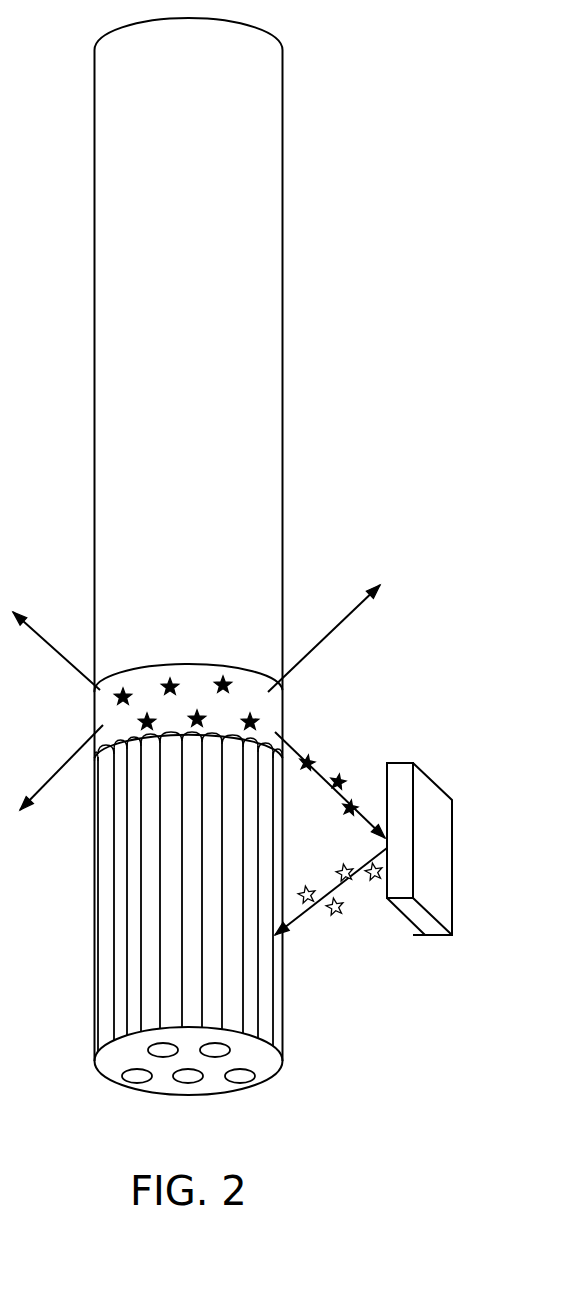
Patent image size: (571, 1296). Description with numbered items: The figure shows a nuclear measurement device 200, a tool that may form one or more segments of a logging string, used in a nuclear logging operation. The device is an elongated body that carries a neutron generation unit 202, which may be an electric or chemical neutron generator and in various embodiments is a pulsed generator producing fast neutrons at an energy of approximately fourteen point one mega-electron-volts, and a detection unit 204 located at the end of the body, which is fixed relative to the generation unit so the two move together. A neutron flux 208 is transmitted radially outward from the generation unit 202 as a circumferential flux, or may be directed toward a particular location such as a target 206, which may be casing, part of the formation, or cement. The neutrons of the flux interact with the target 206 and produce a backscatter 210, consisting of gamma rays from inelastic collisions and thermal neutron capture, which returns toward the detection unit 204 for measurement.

The nuclear measurement device 200 is at (327, 290).
The neutron generation unit 202 is at (192, 683).
The detection unit 204 is at (148, 1085).
The target 206 is at (433, 776).
The neutron flux 208 is at (337, 776).
The backscatter 210 is at (341, 913).